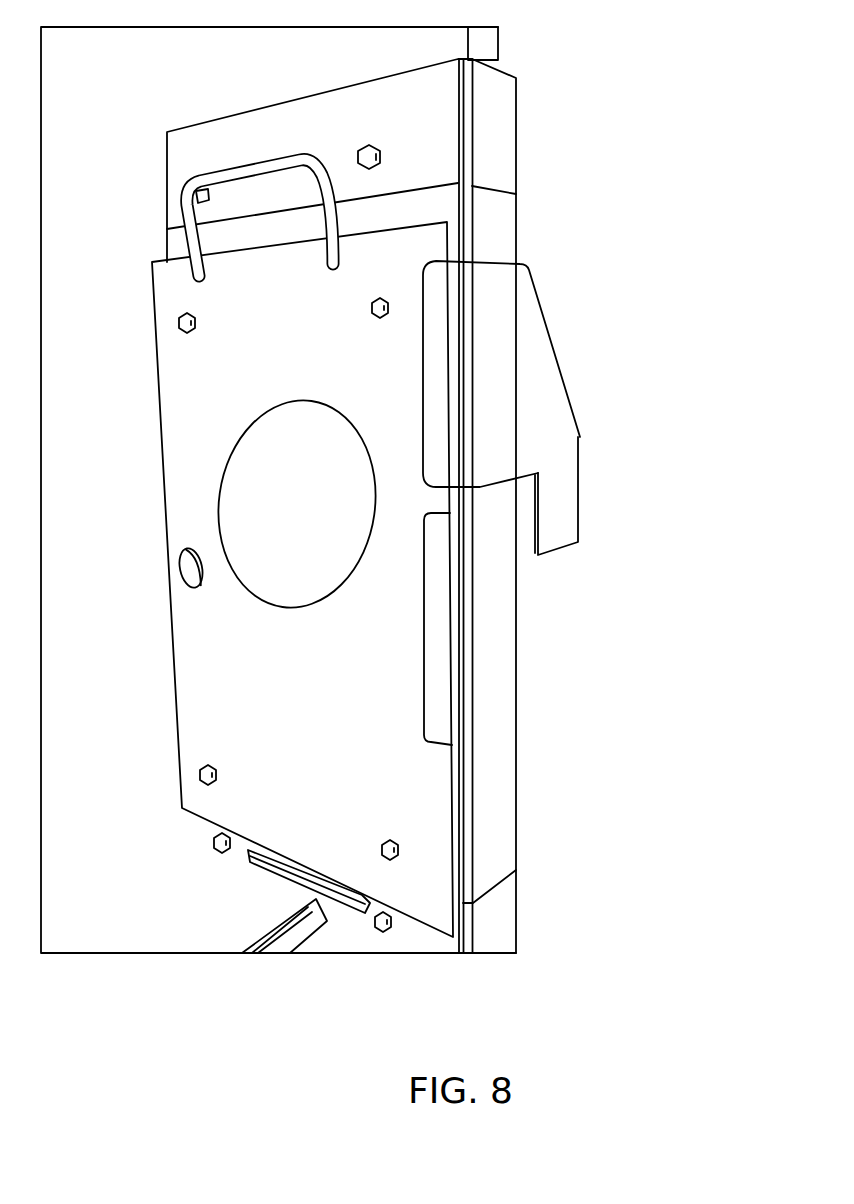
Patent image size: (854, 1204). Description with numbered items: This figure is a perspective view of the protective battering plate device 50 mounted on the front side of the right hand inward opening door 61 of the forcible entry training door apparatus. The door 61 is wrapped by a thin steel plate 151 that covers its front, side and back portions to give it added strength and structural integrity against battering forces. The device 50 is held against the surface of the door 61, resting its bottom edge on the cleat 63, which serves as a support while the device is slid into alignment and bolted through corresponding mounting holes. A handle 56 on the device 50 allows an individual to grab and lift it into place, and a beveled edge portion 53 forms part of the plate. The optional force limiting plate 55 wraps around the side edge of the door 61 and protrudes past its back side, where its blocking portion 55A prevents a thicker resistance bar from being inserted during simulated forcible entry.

The protective battering plate device 50 is at (157, 392).
The beveled edge portion 53 is at (442, 617).
The force limiting plate 55 is at (525, 338).
The blocking portion 55A is at (553, 487).
The handle 56 is at (237, 171).
The right hand inward opening door 61 is at (457, 42).
The cleat 63 is at (363, 893).
The thin steel plate 151 is at (440, 123).